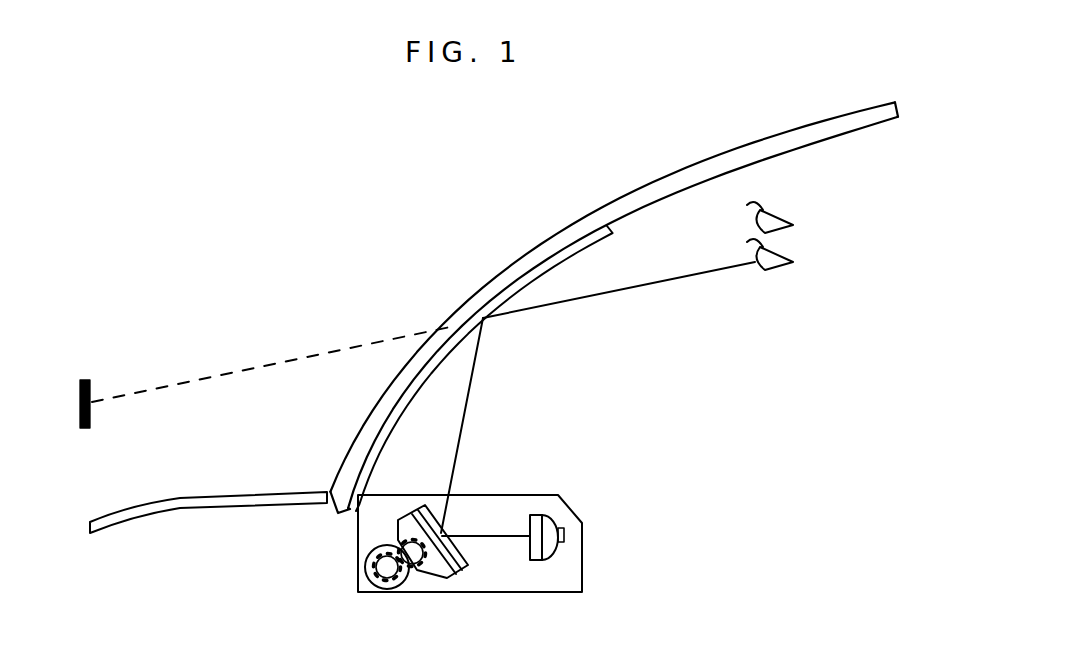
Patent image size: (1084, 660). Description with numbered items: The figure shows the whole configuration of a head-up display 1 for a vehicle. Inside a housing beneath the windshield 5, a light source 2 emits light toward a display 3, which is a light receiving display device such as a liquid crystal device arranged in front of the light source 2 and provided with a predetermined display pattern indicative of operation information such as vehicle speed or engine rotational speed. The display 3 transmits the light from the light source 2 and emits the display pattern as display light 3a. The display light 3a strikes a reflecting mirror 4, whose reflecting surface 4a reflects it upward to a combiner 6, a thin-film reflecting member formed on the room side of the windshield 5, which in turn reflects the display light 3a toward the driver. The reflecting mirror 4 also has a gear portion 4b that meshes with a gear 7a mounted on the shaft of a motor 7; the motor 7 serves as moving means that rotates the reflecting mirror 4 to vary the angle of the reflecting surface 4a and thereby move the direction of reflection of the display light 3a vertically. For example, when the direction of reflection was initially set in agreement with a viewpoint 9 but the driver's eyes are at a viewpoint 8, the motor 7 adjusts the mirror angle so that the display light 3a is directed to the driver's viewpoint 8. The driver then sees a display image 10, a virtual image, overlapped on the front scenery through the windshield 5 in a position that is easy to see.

The head-up display 1 is at (630, 519).
The light source 2 is at (553, 522).
The display 3 is at (533, 515).
The display light 3a is at (468, 397).
The reflecting mirror 4 is at (483, 540).
The reflecting surface 4a is at (463, 565).
The gear portion 4b is at (410, 567).
The windshield 5 is at (541, 250).
The combiner 6 is at (594, 239).
The motor 7 is at (346, 572).
The gear 7a is at (372, 581).
The viewpoint 8 is at (782, 218).
The viewpoint 9 is at (782, 255).
The display image 10 is at (90, 390).